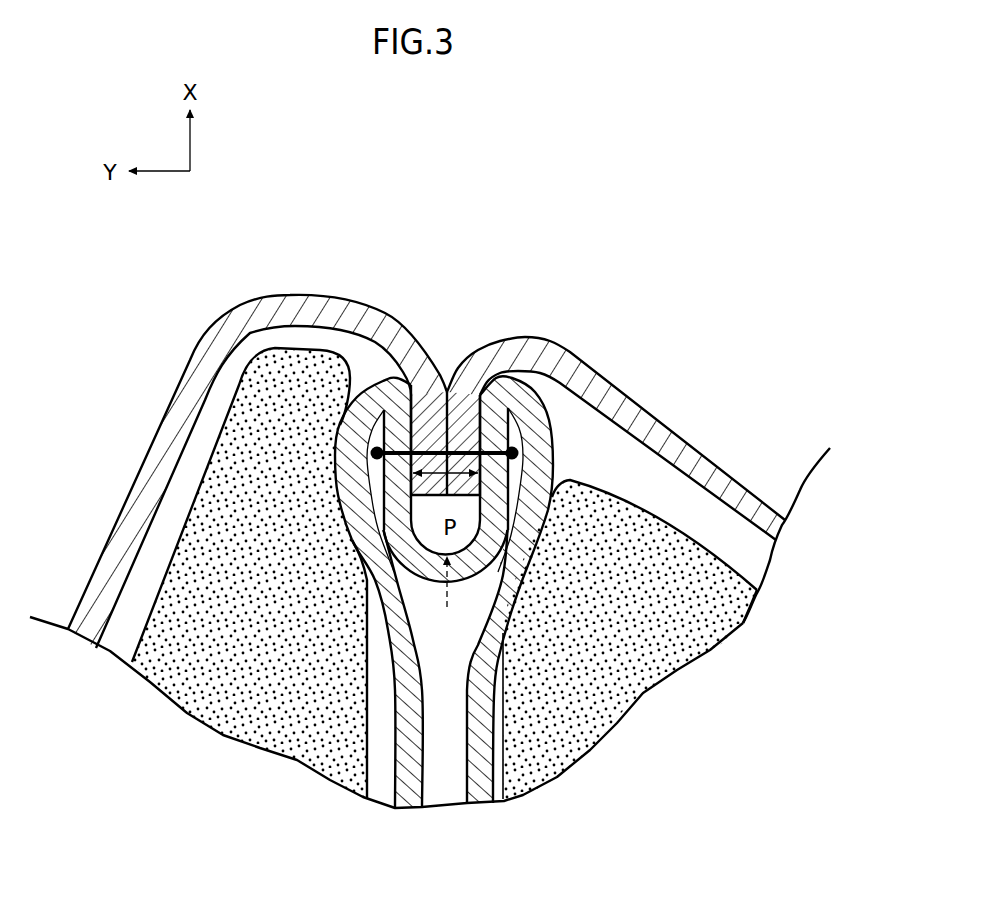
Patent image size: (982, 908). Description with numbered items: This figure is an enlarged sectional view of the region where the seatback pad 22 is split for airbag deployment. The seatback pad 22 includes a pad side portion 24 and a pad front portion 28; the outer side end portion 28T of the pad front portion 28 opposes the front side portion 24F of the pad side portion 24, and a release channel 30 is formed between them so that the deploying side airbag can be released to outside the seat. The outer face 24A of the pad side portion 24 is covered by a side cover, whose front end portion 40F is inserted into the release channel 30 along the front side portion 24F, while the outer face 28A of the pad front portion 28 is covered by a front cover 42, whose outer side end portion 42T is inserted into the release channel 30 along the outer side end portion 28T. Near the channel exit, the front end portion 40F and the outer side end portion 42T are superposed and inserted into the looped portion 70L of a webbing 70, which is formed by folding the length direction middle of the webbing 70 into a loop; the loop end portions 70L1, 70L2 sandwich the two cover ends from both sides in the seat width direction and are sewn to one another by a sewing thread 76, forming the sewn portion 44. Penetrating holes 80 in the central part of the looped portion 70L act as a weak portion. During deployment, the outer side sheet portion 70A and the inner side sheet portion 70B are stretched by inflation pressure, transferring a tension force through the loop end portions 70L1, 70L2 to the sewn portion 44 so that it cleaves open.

The seatback pad 22 is at (428, 628).
The pad side portion 24 is at (147, 577).
The outer face of the pad side portion 24A is at (210, 557).
The front side portion of the pad side portion 24F is at (157, 556).
The pad front portion 28 is at (745, 572).
The outer face of the pad front portion 28A is at (716, 558).
The outer side end portion of the pad front portion 28T is at (645, 630).
The release channel 30 is at (372, 735).
The front end portion of the side cover 40F is at (404, 422).
The front cover 42 is at (724, 454).
The outer side end portion of the front cover 42T is at (512, 475).
The sewn portion 44 is at (463, 297).
The webbing 70 is at (464, 772).
The outer side sheet portion 70A is at (395, 768).
The inner side sheet portion 70B is at (498, 768).
The looped portion 70L is at (554, 470).
The loop end portion 70L1 is at (373, 432).
The loop end portion 70L2 is at (517, 442).
The sewing thread 76 is at (466, 450).
The penetrating holes 80 is at (434, 638).